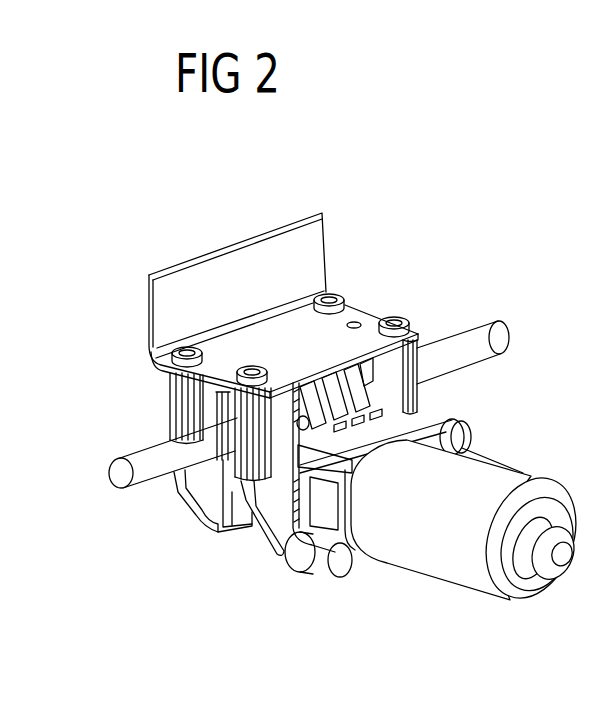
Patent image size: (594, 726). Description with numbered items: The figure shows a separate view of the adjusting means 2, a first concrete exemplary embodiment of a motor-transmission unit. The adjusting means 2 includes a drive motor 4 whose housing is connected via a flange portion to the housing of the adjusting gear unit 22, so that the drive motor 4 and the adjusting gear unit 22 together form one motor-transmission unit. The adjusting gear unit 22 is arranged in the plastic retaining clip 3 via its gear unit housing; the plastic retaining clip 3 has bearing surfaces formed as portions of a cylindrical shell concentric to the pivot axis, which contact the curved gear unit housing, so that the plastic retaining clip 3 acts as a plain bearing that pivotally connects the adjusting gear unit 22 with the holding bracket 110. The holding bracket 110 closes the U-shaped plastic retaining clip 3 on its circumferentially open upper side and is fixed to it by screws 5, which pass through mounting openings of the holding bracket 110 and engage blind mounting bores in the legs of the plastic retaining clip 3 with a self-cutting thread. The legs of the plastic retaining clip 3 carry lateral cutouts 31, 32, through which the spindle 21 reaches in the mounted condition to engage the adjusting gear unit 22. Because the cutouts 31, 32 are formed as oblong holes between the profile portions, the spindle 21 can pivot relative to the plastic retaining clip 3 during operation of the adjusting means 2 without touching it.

The adjusting means 2 is at (476, 214).
The holding bracket 110 is at (308, 260).
The screws 5 is at (250, 364).
The lateral cutout 31 is at (211, 408).
The lateral cutout 32 is at (421, 328).
The spindle 21 is at (477, 337).
The adjusting gear unit 22 is at (433, 406).
The plastic retaining clip 3 is at (278, 521).
The drive motor 4 is at (503, 488).